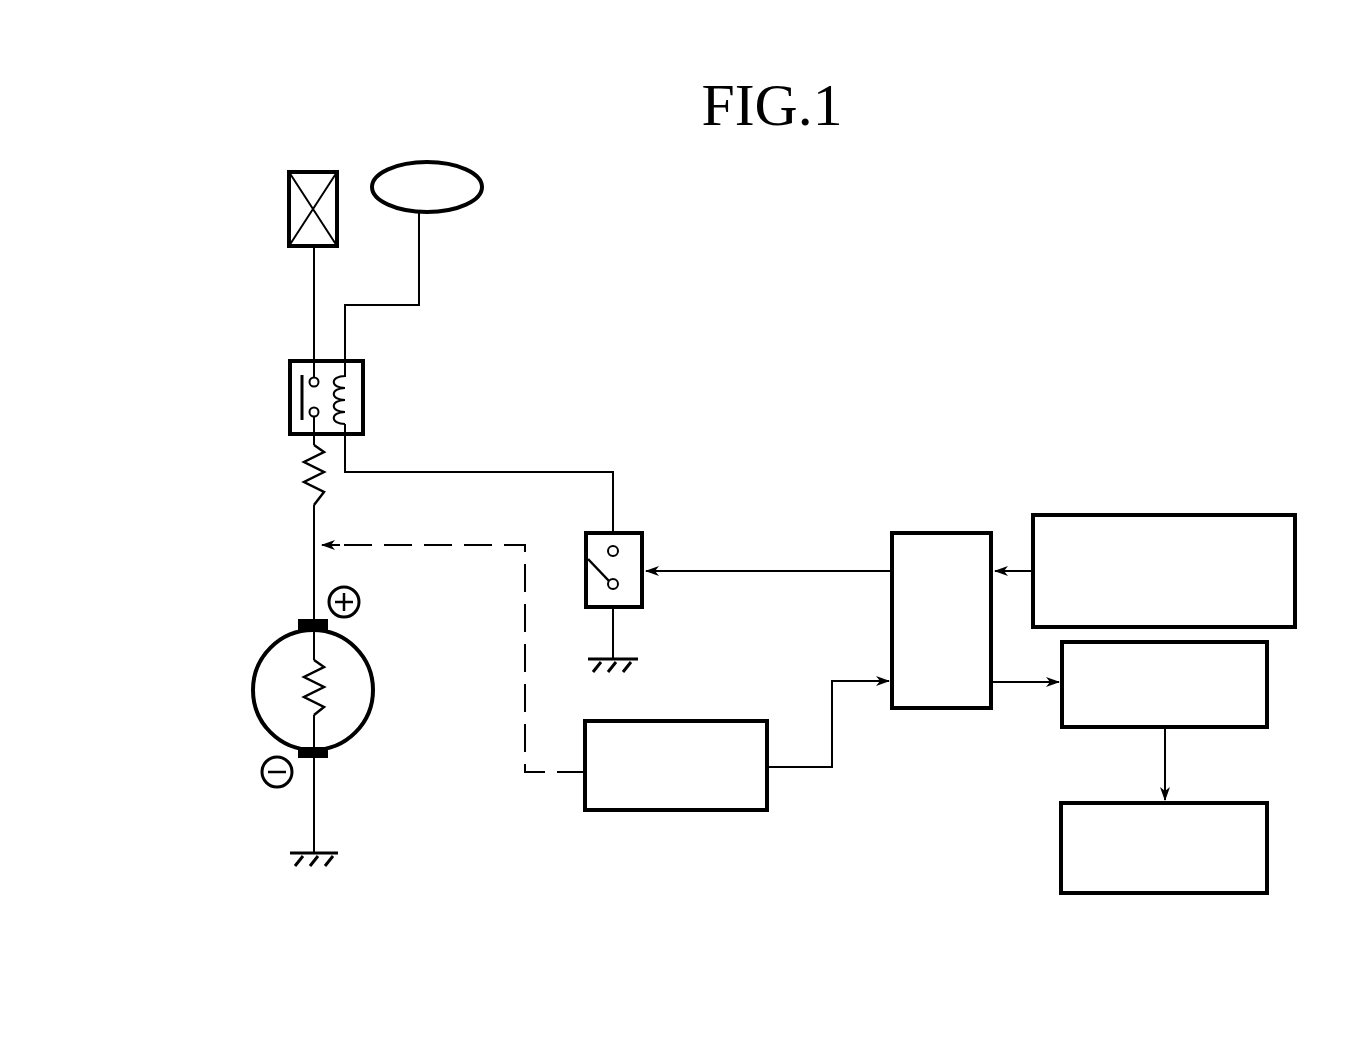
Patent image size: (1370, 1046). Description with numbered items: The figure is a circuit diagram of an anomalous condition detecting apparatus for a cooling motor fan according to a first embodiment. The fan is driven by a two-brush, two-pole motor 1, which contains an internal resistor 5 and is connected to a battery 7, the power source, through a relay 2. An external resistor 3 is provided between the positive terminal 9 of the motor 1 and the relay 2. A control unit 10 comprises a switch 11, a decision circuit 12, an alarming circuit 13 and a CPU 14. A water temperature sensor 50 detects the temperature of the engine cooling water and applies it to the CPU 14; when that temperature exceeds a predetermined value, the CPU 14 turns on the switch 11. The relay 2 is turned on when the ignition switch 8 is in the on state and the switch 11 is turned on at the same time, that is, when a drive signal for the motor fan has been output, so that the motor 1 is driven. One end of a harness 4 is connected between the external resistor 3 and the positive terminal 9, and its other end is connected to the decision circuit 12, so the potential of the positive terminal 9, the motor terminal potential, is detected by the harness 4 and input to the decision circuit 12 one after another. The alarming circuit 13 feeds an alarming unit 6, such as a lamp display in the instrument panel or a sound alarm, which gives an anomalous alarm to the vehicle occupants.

The motor 1 is at (253, 692).
The relay 2 is at (366, 392).
The external resistor 3 is at (304, 485).
The harness 4 is at (480, 548).
The internal resistor 5 is at (320, 692).
The alarming unit 6 is at (1268, 848).
The battery 7 is at (289, 187).
The ignition switch 8 is at (408, 165).
The positive terminal 9 is at (305, 619).
The control unit 10 is at (762, 428).
The switch 11 is at (640, 530).
The decision circuit 12 is at (678, 812).
The alarming circuit 13 is at (1268, 685).
The CPU 14 is at (932, 533).
The water temperature sensor 50 is at (1297, 567).